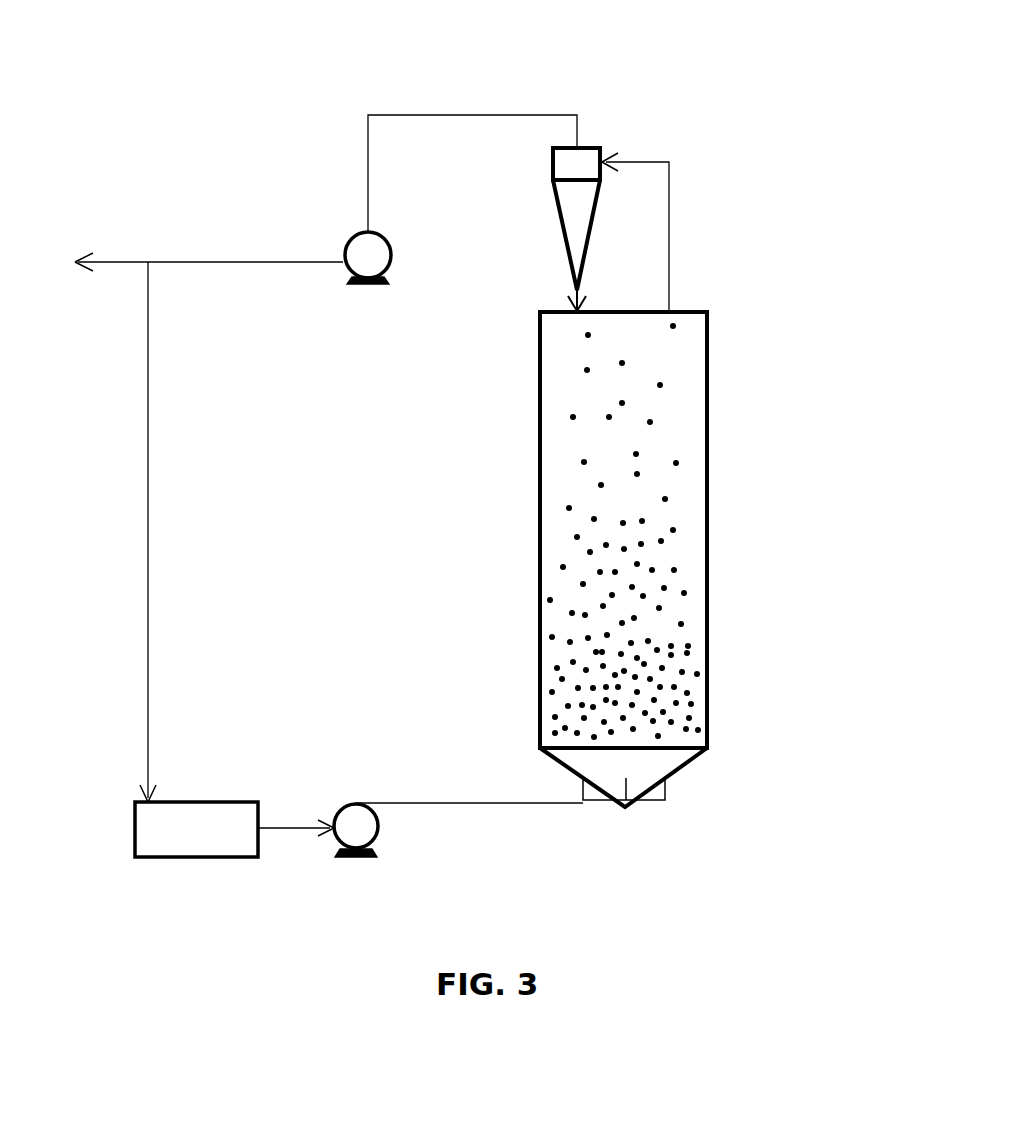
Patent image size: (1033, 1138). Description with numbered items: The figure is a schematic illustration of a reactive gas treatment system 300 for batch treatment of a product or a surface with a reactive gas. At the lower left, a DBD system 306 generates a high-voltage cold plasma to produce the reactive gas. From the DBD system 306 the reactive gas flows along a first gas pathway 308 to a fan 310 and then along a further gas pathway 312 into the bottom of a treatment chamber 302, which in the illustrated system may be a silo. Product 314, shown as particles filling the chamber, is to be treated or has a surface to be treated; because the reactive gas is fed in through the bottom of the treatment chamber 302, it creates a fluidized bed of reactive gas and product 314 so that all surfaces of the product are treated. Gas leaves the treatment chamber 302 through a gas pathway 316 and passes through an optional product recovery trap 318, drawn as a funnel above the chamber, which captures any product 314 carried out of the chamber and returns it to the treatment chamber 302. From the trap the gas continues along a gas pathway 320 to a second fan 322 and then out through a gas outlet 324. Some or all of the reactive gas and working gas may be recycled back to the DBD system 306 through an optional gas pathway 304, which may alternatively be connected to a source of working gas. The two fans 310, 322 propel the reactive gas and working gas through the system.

The reactive gas treatment system 300 is at (628, 71).
The treatment chamber 302 is at (707, 500).
The gas pathway 304 is at (150, 603).
The DBD system 306 is at (196, 829).
The gas pathway 308 is at (297, 830).
The fan 310 is at (378, 857).
The gas pathway 312 is at (513, 805).
The product 314 is at (665, 498).
The gas pathway 316 is at (670, 227).
The product recovery trap 318 is at (560, 220).
The gas pathway 320 is at (443, 114).
The fan 322 is at (378, 286).
The gas outlet 324 is at (115, 258).